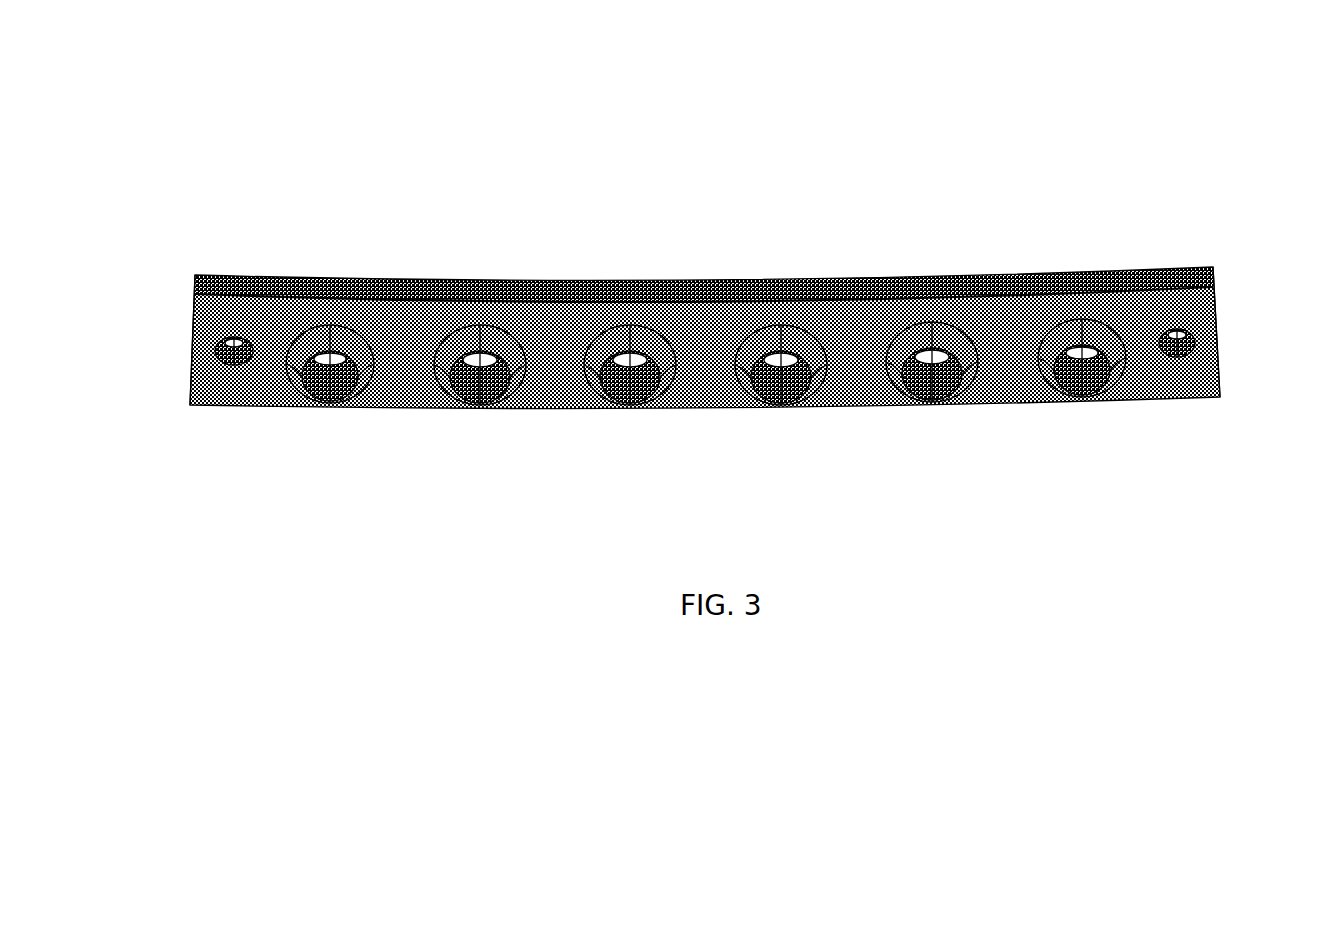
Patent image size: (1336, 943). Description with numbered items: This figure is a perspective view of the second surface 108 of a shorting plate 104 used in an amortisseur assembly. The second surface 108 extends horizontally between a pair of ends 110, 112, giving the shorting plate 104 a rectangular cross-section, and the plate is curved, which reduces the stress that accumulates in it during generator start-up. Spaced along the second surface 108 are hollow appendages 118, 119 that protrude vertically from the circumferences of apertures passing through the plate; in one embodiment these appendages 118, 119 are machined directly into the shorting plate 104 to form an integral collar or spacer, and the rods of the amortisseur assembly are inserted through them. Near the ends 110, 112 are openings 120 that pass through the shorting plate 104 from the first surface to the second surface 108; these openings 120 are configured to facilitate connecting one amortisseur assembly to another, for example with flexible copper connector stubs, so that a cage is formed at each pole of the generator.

The shorting plate 104 is at (1133, 75).
The second surface 108 is at (705, 338).
The end 110 is at (180, 345).
The end 112 is at (1227, 342).
The hollow appendage 118 is at (463, 342).
The hollow appendage 119 is at (312, 347).
The opening 120 is at (233, 343).